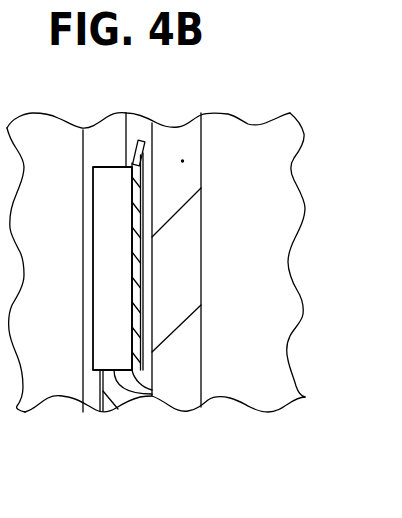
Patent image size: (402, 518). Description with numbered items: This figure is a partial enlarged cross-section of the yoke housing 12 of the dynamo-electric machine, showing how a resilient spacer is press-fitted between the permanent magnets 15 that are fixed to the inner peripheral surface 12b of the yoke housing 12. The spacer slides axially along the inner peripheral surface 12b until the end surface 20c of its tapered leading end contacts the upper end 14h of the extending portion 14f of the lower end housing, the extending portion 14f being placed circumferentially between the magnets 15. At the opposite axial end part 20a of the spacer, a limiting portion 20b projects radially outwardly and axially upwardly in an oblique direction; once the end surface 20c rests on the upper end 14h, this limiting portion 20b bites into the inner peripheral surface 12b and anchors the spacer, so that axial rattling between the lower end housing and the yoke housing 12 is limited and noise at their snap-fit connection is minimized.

The yoke housing 12 is at (201, 158).
The inner peripheral surface 12b is at (150, 241).
The extending portion 14f is at (153, 372).
The upper end 14h is at (103, 369).
The permanent magnet 15 is at (103, 133).
The axial end part 20a is at (102, 167).
The limiting portion 20b is at (138, 141).
The end surface 20c is at (136, 398).